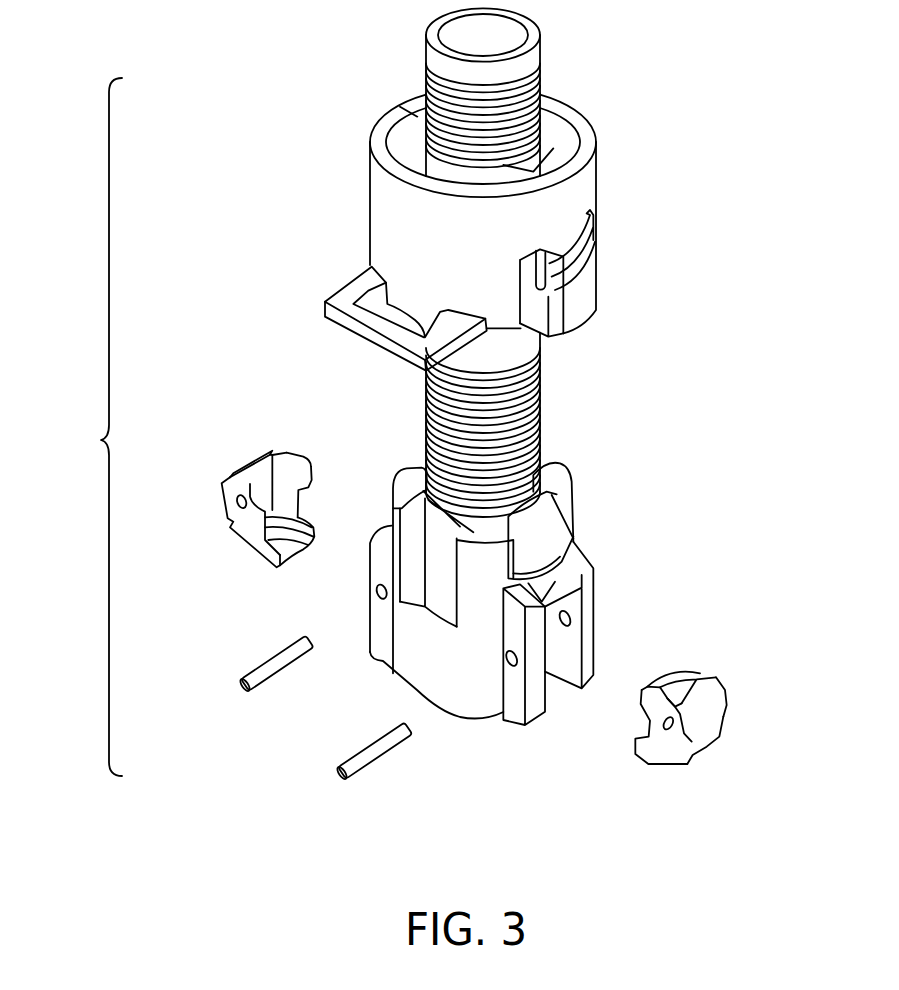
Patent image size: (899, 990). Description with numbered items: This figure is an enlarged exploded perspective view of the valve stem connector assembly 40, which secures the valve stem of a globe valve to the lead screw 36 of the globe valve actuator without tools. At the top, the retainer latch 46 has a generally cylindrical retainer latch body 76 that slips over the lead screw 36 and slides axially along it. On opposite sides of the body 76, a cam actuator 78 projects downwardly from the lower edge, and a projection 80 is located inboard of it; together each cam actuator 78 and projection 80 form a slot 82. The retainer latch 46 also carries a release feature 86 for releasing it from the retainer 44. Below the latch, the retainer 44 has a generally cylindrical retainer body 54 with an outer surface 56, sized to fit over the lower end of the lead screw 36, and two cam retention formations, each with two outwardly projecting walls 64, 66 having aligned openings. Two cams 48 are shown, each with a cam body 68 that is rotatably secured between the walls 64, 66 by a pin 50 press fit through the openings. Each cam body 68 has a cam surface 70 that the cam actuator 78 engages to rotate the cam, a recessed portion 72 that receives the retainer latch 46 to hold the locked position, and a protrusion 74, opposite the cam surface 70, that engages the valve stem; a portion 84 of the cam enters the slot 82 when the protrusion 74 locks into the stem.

The valve stem connector assembly 40 is at (96, 435).
The lead screw 36 is at (543, 53).
The retainer latch 46 is at (370, 103).
The retainer latch body 76 is at (580, 190).
The slot 82 is at (545, 288).
The projection 80 is at (542, 316).
The cam actuator 78 is at (575, 322).
The release feature 86 is at (353, 330).
The retainer 44 is at (586, 480).
The retainer body 54 is at (417, 655).
The outer surface 56 is at (498, 583).
The wall 66 is at (592, 595).
The wall 64 is at (537, 688).
The cam 48 is at (222, 558).
The recessed portion 72 is at (258, 465).
The portion of the cam 84 is at (237, 475).
The cam body 68 is at (225, 493).
The cam surface 70 is at (230, 522).
The protrusion 74 is at (287, 557).
The pin 50 is at (242, 692).